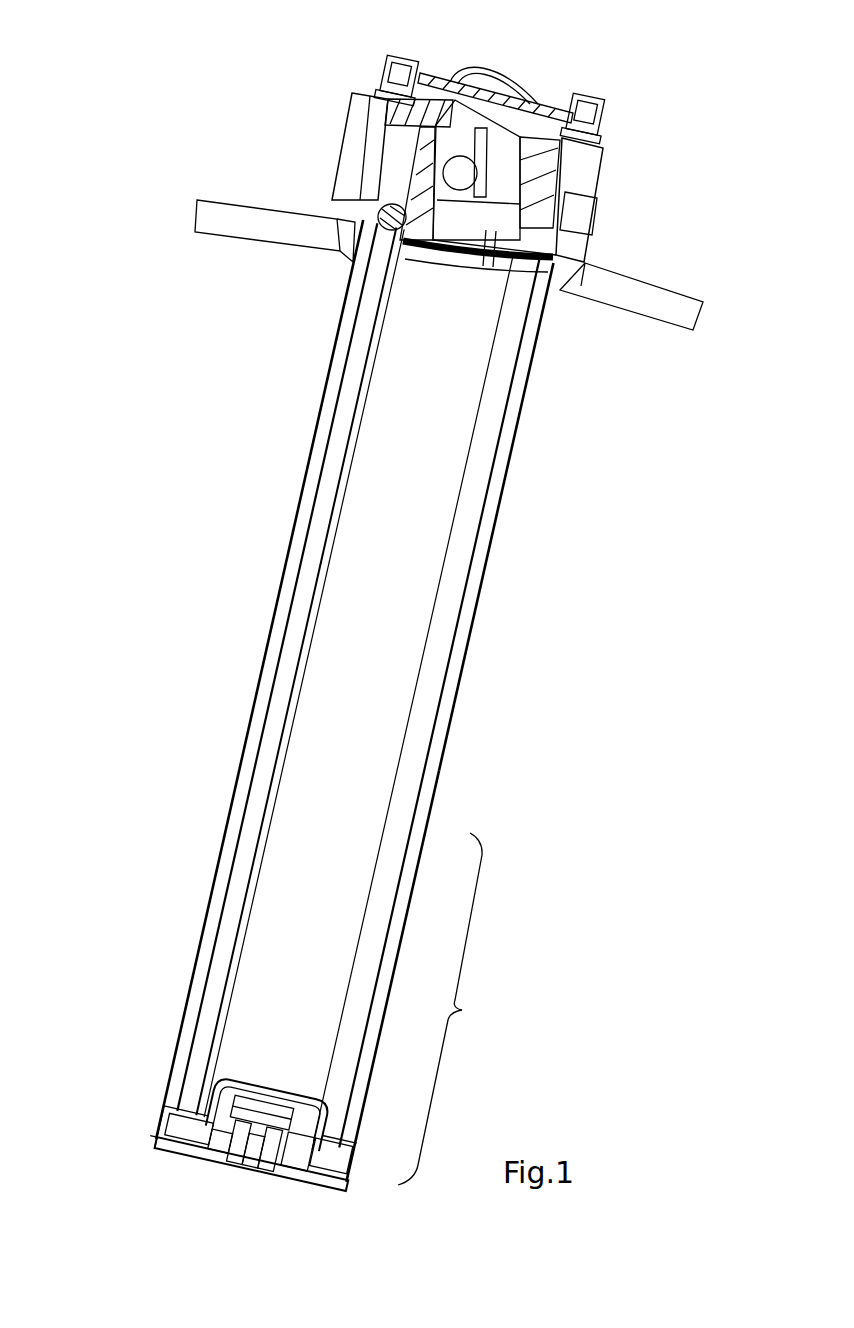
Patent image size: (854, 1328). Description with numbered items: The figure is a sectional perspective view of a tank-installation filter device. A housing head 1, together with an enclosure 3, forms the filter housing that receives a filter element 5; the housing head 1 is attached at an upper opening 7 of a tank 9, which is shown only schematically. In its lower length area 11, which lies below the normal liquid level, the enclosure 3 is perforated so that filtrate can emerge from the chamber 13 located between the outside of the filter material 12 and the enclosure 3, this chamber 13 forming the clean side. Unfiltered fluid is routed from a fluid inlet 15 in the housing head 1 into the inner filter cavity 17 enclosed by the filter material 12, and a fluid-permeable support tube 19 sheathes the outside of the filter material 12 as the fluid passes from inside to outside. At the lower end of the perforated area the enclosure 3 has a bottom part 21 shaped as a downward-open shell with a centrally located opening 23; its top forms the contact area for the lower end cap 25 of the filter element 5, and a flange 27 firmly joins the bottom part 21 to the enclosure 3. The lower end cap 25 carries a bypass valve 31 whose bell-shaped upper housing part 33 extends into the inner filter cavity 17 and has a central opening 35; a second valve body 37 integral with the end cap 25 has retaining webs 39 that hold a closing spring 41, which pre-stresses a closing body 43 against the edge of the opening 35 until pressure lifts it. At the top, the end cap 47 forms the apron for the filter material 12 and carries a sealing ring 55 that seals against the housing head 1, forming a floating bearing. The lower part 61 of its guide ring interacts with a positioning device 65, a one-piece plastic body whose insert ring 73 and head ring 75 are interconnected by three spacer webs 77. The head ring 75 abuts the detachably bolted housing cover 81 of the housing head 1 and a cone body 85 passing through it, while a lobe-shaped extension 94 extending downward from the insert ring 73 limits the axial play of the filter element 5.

The housing head 1 is at (516, 186).
The enclosure 3 is at (475, 618).
The filter element 5 is at (450, 535).
The upper opening 7 is at (305, 216).
The tank 9 is at (633, 297).
The lower length area 11 is at (442, 1009).
The filter material 12 is at (440, 665).
The chamber 13 is at (430, 794).
The fluid inlet 15 is at (348, 133).
The inner filter cavity 17 is at (393, 443).
The support tube 19 is at (285, 570).
The bottom part 21 is at (176, 1155).
The centrally located opening 23 is at (290, 1177).
The end cap 25 is at (205, 1105).
The flange 27 is at (155, 1142).
The bypass valve 31 is at (243, 1073).
The upper housing part 33 is at (297, 1100).
The central opening 35 is at (272, 1082).
The second valve body 37 is at (237, 1165).
The retaining webs 39 is at (210, 1153).
The closing spring 41 is at (264, 1165).
The closing body 43 is at (270, 1102).
The end cap 47 is at (395, 210).
The sealing ring 55 is at (548, 252).
The lower part 61 is at (418, 258).
The positioning device 65 is at (568, 172).
The insert ring 73 is at (513, 212).
The head ring 75 is at (514, 142).
The spacer webs 77 is at (418, 145).
The housing cover 81 is at (600, 120).
The cone body 85 is at (505, 122).
The lobe-shaped extension 94 is at (488, 250).